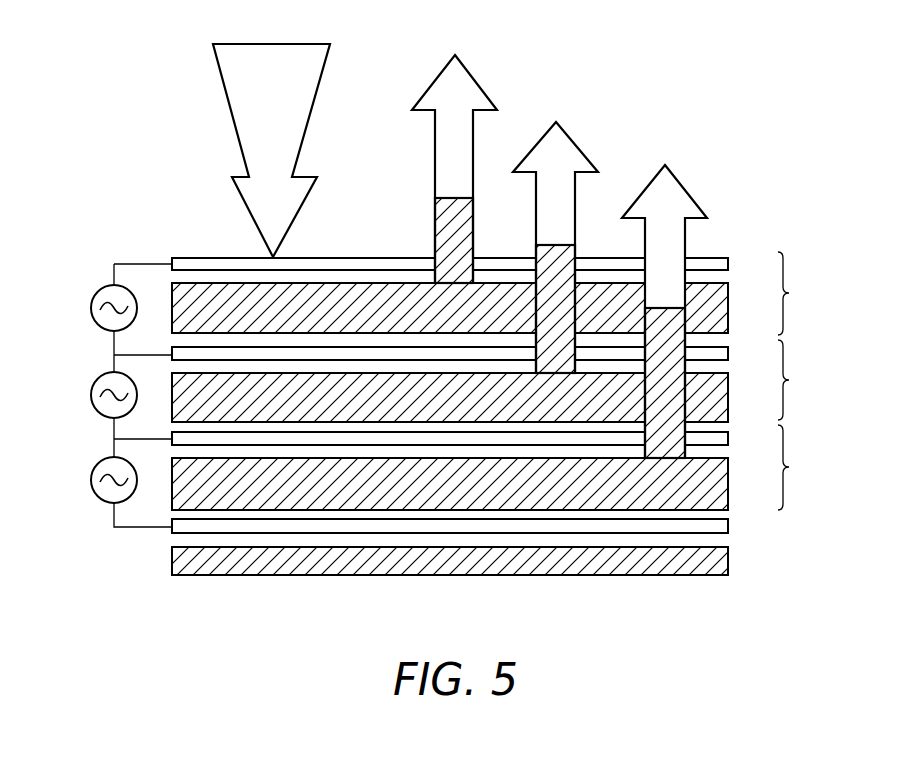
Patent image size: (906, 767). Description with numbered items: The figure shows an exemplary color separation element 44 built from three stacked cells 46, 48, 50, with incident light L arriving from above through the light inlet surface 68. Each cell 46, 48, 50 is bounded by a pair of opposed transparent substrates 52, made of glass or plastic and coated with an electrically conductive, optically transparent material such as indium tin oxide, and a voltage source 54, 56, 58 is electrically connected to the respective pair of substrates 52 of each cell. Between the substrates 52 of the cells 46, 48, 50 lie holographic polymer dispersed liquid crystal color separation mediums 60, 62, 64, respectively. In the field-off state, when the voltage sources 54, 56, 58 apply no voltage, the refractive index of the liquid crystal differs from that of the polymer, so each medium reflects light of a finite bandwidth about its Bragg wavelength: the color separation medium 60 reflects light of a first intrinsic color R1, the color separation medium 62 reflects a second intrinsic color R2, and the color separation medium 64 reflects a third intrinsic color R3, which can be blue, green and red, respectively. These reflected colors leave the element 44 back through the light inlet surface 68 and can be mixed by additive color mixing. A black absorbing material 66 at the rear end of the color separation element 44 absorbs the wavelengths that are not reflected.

The color separation element 44 is at (669, 105).
The cell 46 is at (797, 293).
The cell 48 is at (797, 380).
The cell 50 is at (797, 467).
The substrates 52 is at (720, 253).
The voltage source 54 is at (97, 296).
The voltage source 56 is at (99, 378).
The voltage source 58 is at (99, 463).
The color separation medium 60 is at (730, 300).
The color separation medium 62 is at (730, 398).
The color separation medium 64 is at (730, 478).
The black absorbing material 66 is at (730, 558).
The light inlet surface 68 is at (362, 257).
The light L is at (222, 75).
The intrinsic color R1 is at (459, 162).
The intrinsic color R2 is at (574, 148).
The intrinsic color R3 is at (695, 200).